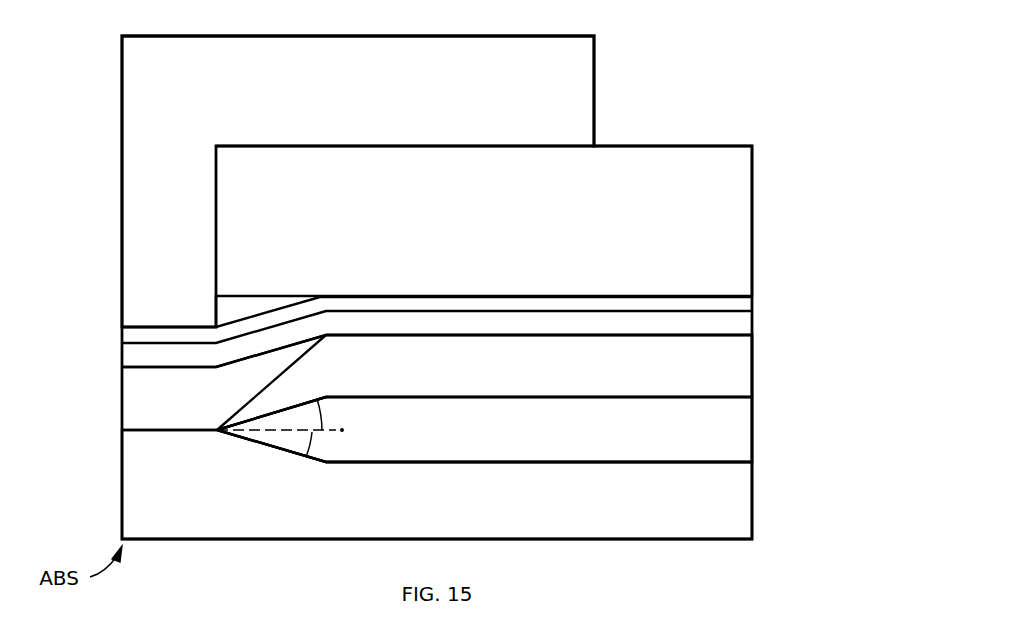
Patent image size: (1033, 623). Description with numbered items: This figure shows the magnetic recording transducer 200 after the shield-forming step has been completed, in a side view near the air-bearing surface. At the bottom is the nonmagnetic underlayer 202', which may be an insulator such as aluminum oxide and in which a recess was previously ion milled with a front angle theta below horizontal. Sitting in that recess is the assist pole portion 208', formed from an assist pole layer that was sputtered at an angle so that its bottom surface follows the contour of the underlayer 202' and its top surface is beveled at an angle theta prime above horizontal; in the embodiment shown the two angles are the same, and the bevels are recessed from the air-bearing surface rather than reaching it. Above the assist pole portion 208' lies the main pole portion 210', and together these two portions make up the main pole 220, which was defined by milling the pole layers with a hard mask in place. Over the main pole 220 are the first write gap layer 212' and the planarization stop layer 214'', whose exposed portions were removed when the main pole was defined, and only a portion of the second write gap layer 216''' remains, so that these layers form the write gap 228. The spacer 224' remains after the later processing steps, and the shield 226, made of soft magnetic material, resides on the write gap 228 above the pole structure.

The magnetic recording transducer 200 is at (457, 24).
The shield 226 is at (594, 106).
The spacer 224' is at (526, 236).
The second write gap layer 216''' is at (400, 285).
The planarization stop layer 214'' is at (479, 305).
The write gap 228 is at (114, 366).
The first write gap layer 212' is at (402, 382).
The main pole portion 210' is at (395, 429).
The main pole 220 is at (778, 335).
The underlayer 202' is at (463, 484).
The assist pole portion 208' is at (539, 513).